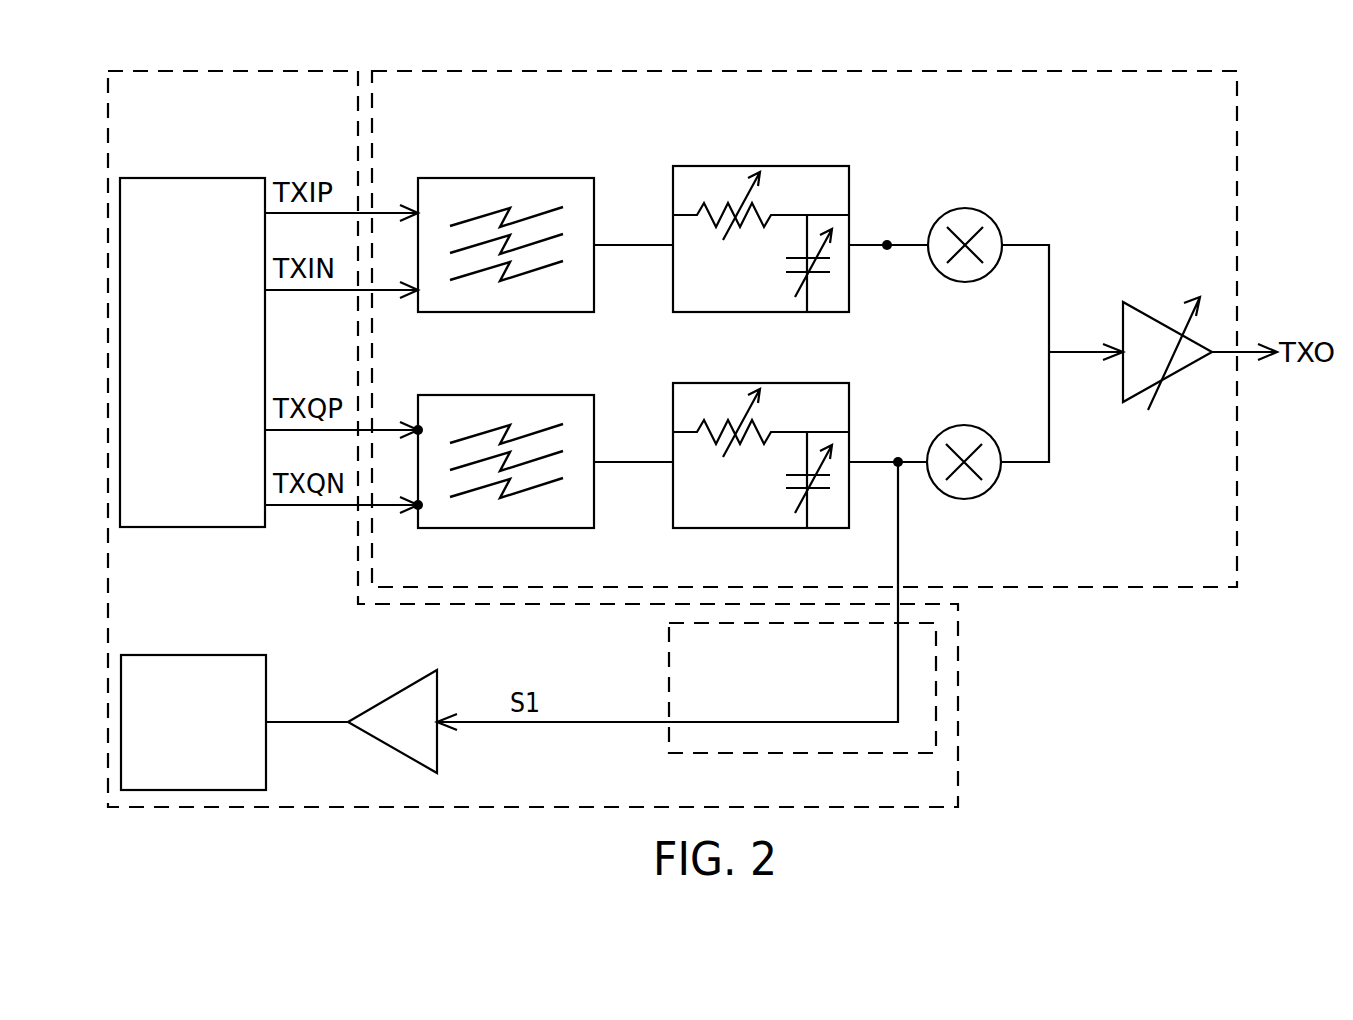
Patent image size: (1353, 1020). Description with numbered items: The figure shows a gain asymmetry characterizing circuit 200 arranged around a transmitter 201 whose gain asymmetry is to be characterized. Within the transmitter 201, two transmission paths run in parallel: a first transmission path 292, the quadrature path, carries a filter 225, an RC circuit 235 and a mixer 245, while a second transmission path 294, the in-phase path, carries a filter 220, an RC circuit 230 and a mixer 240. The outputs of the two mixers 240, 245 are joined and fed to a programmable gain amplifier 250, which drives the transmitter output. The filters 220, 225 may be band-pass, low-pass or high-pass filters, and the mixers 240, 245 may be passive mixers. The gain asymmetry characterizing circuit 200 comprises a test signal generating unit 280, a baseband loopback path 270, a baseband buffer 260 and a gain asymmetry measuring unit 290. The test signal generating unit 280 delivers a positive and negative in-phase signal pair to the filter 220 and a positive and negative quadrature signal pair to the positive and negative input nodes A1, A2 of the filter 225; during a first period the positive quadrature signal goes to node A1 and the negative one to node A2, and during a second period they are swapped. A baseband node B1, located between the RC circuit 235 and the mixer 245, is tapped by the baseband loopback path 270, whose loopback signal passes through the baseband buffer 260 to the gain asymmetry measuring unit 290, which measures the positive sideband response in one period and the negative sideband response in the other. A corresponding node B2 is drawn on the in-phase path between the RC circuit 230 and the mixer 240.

The gain asymmetry characterizing circuit 200 is at (255, 69).
The transmitter 201 is at (1239, 200).
The filter 220 is at (570, 178).
The filter 225 is at (570, 395).
The RC circuit 230 is at (810, 166).
The RC circuit 235 is at (810, 383).
The mixer 240 is at (968, 208).
The mixer 245 is at (966, 425).
The programmable gain amplifier 250 is at (1160, 316).
The baseband buffer 260 is at (384, 700).
The baseband loopback path 270 is at (918, 688).
The test signal generating unit 280 is at (118, 340).
The gain asymmetry measuring unit 290 is at (118, 722).
The first transmission path 292 is at (1022, 463).
The second transmission path 294 is at (1024, 244).
The positive input node A1 is at (416, 428).
The negative input node A2 is at (416, 508).
The baseband node B1 is at (899, 445).
The node B2 is at (888, 228).